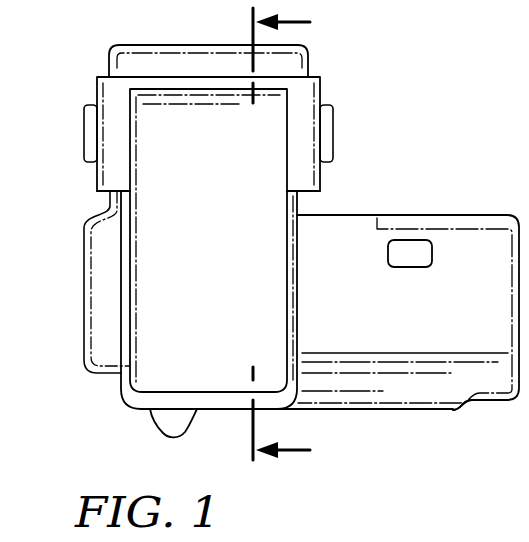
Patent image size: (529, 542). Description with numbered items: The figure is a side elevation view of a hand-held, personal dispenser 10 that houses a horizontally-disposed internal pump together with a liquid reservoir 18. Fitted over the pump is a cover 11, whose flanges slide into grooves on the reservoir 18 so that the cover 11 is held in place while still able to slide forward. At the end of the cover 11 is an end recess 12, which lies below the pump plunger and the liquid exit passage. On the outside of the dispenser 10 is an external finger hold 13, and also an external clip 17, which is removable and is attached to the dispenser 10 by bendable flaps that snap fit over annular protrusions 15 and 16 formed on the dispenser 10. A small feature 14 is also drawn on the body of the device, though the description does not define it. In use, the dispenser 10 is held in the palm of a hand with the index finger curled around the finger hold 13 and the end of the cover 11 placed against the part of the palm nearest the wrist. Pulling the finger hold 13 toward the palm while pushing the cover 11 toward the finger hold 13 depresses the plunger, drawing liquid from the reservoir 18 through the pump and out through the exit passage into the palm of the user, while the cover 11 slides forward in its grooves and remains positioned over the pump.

The dispenser 10 is at (454, 140).
The cover 11 is at (482, 250).
The end recess 12 is at (487, 398).
The finger hold 13 is at (173, 430).
The button 14 is at (415, 251).
The annular protrusion 15 is at (333, 127).
The annular protrusion 16 is at (84, 127).
The clip 17 is at (200, 100).
The liquid reservoir 18 is at (143, 45).